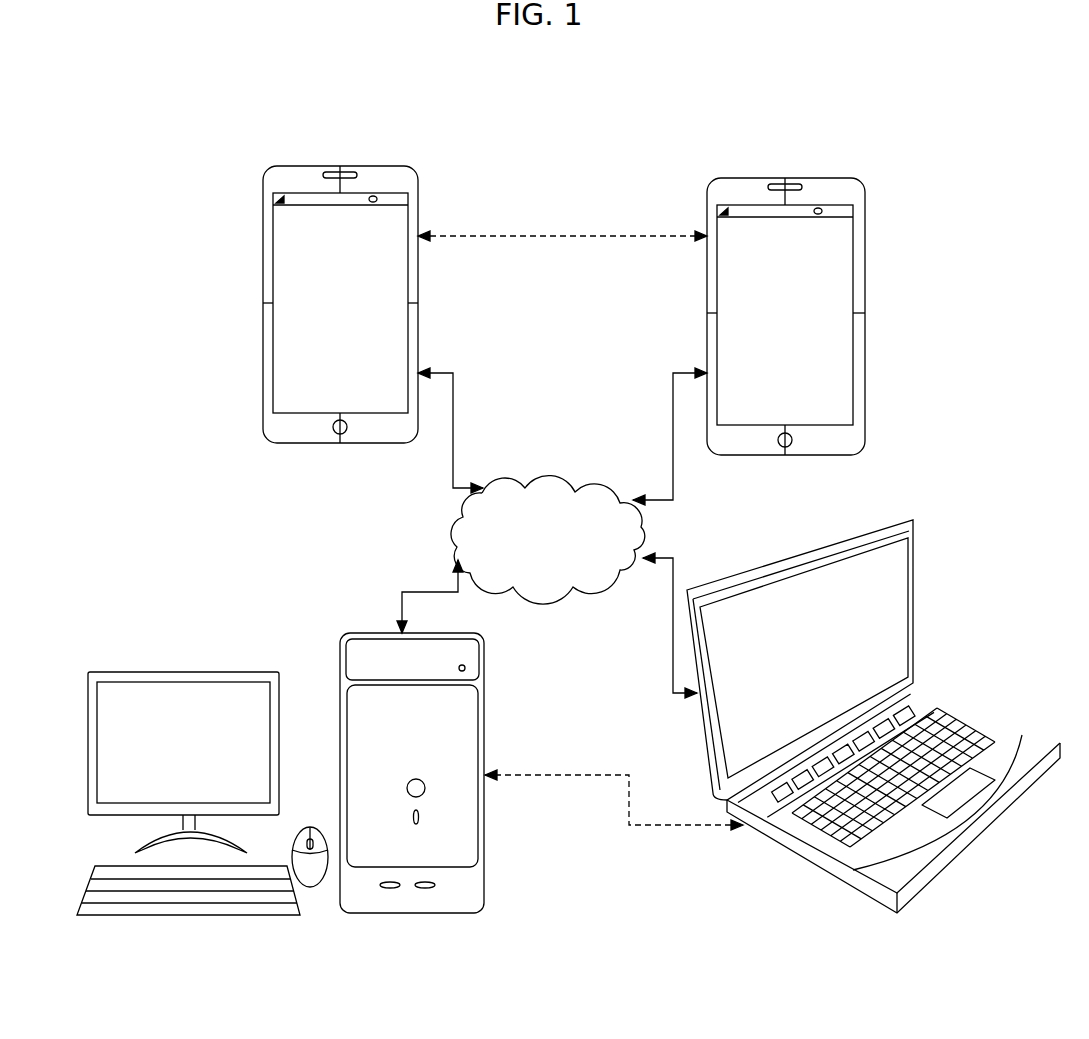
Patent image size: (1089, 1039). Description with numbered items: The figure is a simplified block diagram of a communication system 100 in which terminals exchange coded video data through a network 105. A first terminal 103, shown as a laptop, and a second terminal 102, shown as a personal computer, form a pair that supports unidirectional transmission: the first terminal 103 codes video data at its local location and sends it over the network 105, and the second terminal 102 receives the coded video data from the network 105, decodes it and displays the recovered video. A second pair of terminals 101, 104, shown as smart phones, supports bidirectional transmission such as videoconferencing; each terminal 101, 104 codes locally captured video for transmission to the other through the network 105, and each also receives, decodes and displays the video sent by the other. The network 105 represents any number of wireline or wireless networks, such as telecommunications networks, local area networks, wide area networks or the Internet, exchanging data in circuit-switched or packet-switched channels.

The communication system 100 is at (110, 136).
The terminal 101 is at (263, 288).
The second terminal 102 is at (485, 875).
The first terminal 103 is at (703, 720).
The terminal 104 is at (707, 282).
The network 105 is at (555, 472).